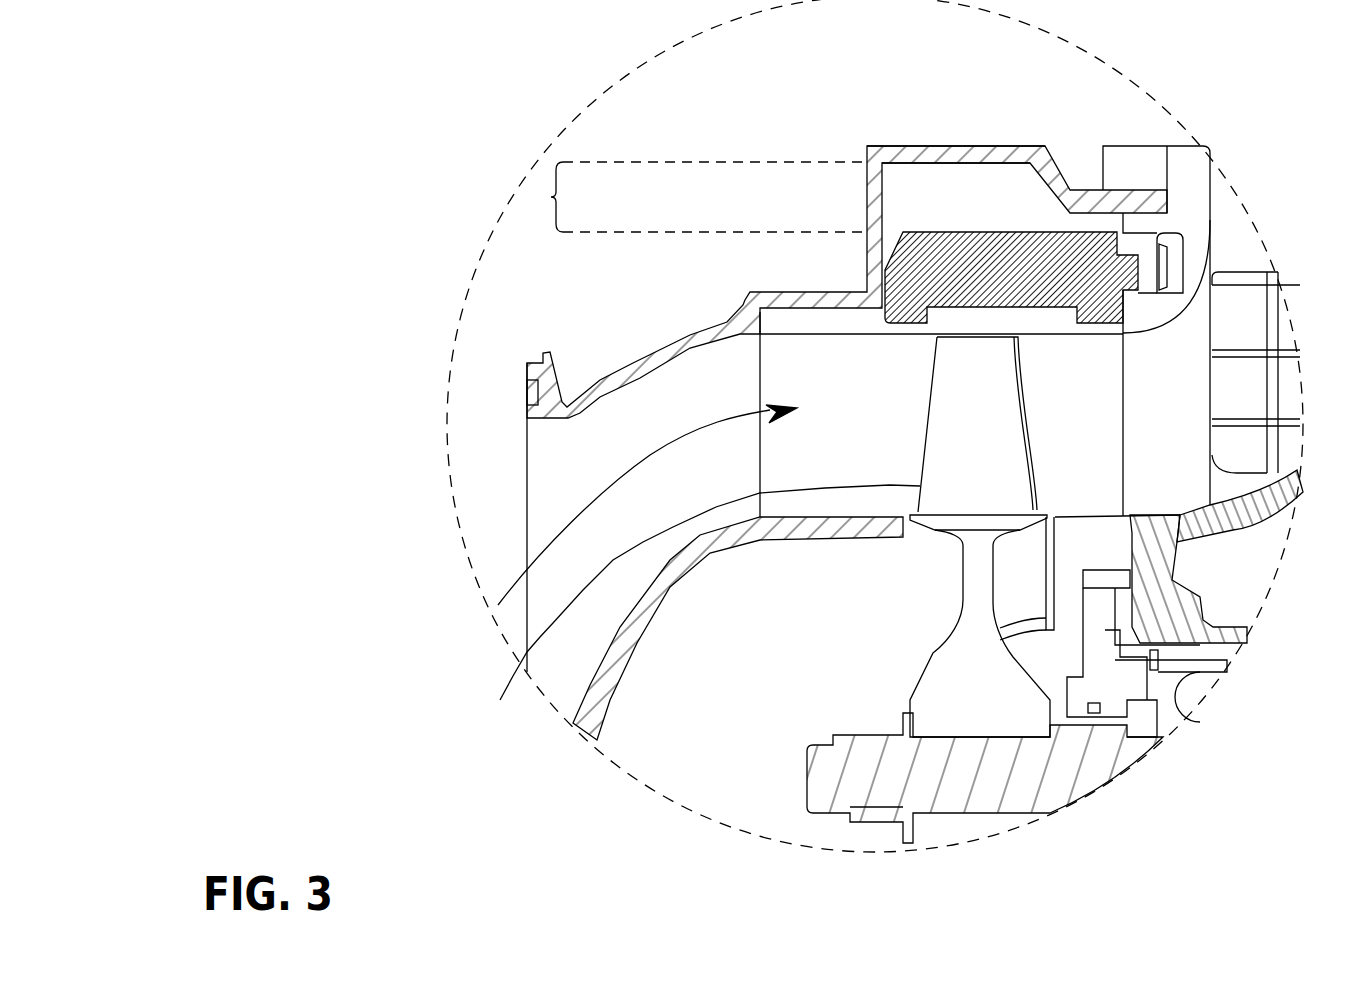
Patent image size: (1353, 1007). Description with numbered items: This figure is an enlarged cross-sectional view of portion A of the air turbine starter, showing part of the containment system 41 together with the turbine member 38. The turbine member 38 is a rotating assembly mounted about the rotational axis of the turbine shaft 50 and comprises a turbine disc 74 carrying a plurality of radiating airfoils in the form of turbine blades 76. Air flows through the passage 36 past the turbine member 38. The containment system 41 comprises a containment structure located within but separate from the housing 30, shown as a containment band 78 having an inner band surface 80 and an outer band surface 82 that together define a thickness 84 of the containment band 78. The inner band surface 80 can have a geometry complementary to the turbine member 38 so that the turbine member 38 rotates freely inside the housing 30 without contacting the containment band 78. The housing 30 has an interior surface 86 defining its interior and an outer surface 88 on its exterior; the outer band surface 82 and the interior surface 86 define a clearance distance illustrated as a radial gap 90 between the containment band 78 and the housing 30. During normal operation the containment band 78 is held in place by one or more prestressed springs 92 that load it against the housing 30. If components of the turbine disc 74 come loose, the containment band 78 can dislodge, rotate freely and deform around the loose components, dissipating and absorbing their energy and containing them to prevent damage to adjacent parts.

The housing 30 is at (927, 146).
The airflow path 36 is at (650, 455).
The turbine member 38 is at (920, 430).
The containment system 41 is at (932, 205).
The turbine shaft 50 is at (1040, 767).
The turbine disc 74 is at (955, 640).
The turbine blades 76 is at (697, 612).
The containment band 78 is at (1043, 247).
The inner band surface 80 is at (1003, 307).
The outer band surface 82 is at (1077, 233).
The thickness 84 is at (947, 278).
The interior surface 86 is at (993, 162).
The outer surface 88 is at (957, 147).
The radial gap 90 is at (520, 218).
The prestressed springs 92 is at (1167, 268).
The portion A is at (1163, 110).